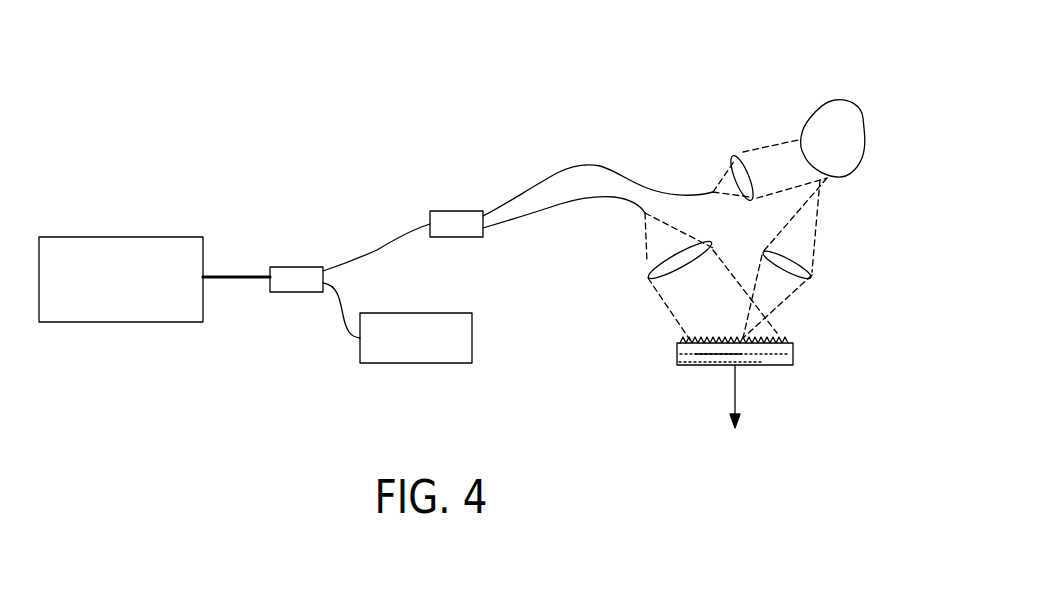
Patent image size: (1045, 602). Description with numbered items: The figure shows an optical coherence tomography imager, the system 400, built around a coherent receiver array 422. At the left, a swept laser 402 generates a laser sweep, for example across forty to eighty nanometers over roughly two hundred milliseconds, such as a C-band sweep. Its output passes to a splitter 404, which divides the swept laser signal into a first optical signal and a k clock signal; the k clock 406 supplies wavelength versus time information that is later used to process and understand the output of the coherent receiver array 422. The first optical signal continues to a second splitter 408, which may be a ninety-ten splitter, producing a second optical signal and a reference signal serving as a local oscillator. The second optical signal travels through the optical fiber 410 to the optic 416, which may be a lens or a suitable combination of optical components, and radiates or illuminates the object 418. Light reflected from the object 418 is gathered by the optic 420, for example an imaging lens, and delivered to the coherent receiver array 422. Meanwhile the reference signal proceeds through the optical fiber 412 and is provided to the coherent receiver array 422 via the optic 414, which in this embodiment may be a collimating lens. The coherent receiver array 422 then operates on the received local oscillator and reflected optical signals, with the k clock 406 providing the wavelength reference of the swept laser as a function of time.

The system 400 is at (241, 80).
The swept laser 402 is at (120, 322).
The splitter 404 is at (296, 265).
The k clock 406 is at (415, 363).
The splitter 408 is at (450, 210).
The optical fiber 410 is at (562, 160).
The optical fiber 412 is at (515, 238).
The optic 414 is at (590, 308).
The optic 416 is at (732, 156).
The object 418 is at (862, 118).
The optic 420 is at (870, 278).
The coherent receiver array 422 is at (793, 360).